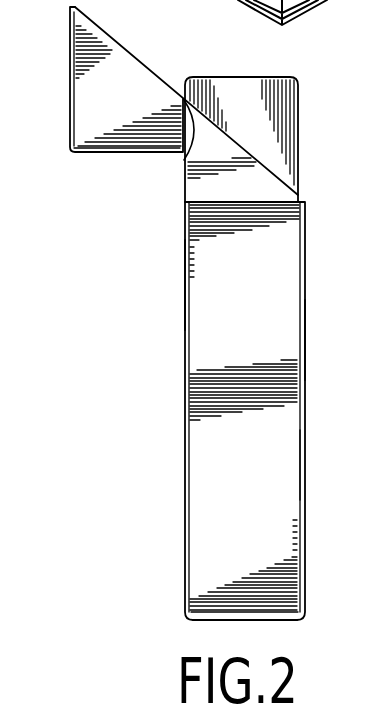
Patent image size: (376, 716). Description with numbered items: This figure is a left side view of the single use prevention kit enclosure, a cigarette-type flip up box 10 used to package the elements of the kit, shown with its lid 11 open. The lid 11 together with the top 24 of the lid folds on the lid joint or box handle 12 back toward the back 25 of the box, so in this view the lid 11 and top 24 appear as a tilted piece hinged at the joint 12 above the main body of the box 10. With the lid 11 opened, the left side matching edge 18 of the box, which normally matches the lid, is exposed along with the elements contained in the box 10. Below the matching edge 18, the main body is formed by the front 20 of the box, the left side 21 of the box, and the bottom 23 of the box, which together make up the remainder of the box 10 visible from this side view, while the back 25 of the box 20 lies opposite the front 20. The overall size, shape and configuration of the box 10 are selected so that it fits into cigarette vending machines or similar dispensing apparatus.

The flip up box 10 is at (203, 366).
The lid 11 is at (70, 97).
The lid joint 12 is at (185, 155).
The left matching edge 18 is at (258, 158).
The front of box 20 is at (307, 343).
The left side of box 21 is at (270, 463).
The bottom of box 23 is at (213, 622).
The top of box lid 24 is at (115, 153).
The back of box 25 is at (183, 298).